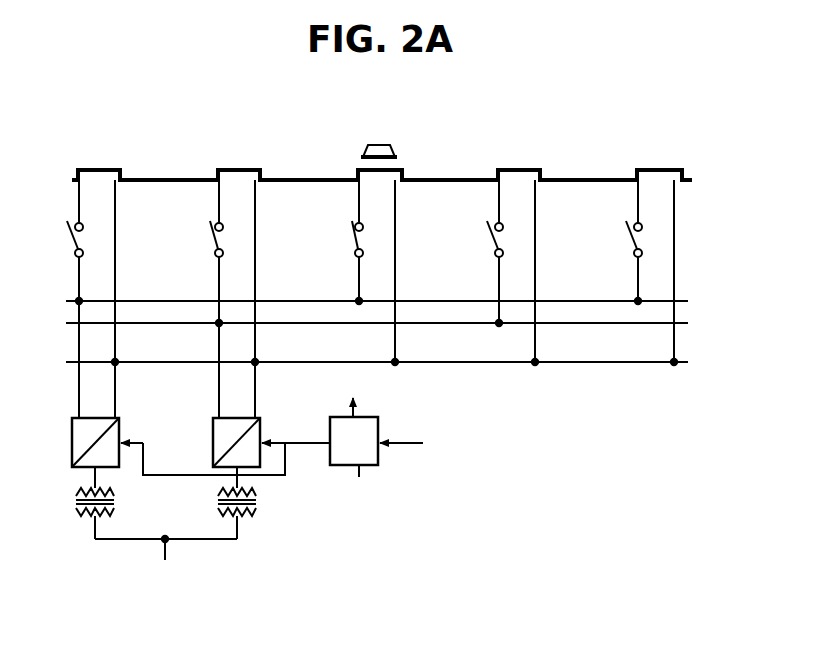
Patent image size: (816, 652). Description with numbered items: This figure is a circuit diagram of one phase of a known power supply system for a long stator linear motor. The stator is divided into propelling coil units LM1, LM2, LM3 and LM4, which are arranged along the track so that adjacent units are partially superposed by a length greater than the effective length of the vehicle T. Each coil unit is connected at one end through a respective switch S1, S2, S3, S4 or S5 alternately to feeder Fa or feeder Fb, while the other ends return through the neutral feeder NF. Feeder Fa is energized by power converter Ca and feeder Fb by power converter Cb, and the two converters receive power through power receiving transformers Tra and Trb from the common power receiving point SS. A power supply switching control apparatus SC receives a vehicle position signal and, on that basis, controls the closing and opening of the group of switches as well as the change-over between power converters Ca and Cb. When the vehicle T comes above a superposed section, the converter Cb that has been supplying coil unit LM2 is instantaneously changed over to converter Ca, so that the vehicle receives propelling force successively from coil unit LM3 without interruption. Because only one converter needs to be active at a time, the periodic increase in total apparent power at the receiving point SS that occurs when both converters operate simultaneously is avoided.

The propelling coil unit LM1 is at (167, 178).
The propelling coil unit LM2 is at (306, 178).
The propelling coil unit LM3 is at (457, 178).
The propelling coil unit LM4 is at (593, 178).
The vehicle T is at (379, 144).
The switch S1 is at (72, 243).
The switch S2 is at (213, 243).
The switch S3 is at (352, 243).
The switch S4 is at (488, 243).
The switch S5 is at (626, 240).
The feeder Fa is at (68, 301).
The feeder Fb is at (68, 323).
The neutral feeder NF is at (68, 362).
The power converter Ca is at (121, 421).
The power converter Cb is at (262, 421).
The power supply switching control apparatus SC is at (510, 436).
The power receiving transformer Tra is at (117, 504).
The power receiving transformer Trb is at (259, 504).
The power receiving point SS is at (166, 565).